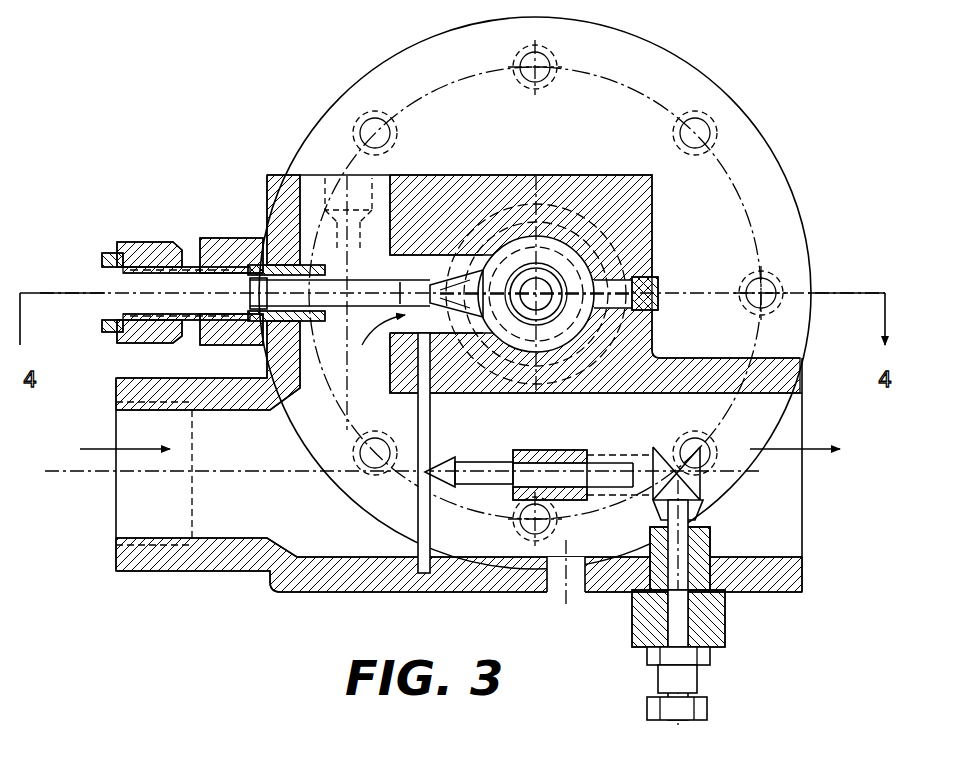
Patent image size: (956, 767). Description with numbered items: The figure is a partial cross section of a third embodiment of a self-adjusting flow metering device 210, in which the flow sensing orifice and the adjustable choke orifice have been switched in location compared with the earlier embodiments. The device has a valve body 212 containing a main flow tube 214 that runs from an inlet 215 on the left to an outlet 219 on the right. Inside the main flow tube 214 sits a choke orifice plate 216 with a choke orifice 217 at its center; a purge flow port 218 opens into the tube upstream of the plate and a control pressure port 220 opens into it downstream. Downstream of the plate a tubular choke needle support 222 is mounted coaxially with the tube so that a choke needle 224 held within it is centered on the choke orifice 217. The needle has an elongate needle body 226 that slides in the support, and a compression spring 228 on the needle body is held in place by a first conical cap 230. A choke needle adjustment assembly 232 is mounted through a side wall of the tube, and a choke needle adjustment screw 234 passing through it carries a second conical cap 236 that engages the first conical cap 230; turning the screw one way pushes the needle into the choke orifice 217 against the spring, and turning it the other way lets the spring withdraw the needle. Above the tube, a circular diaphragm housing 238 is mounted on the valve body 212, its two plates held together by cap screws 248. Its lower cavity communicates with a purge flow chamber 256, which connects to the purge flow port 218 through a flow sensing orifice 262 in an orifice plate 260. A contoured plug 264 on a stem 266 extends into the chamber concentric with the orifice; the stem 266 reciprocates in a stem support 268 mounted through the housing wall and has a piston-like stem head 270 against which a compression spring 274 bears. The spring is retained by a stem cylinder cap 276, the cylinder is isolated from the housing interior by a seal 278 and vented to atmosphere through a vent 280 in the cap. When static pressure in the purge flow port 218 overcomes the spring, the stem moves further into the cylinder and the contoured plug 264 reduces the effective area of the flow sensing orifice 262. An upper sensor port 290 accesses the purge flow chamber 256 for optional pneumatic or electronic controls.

The self-adjusting flow metering device 210 is at (157, 152).
The valve body 212 is at (262, 602).
The main flow tube 214 is at (240, 540).
The inlet 215 is at (116, 525).
The choke orifice plate 216 is at (425, 505).
The choke orifice 217 is at (400, 500).
The purge flow port 218 is at (400, 382).
The outlet 219 is at (796, 557).
The control pressure port 220 is at (575, 595).
The tubular choke needle support 222 is at (540, 450).
The choke needle 224 is at (448, 455).
The needle body 226 is at (610, 500).
The compression spring 228 is at (625, 455).
The first conical cap 230 is at (688, 445).
The choke needle adjustment assembly 232 is at (732, 622).
The choke needle adjustment screw 234 is at (712, 706).
The second conical cap 236 is at (705, 485).
The circular diaphragm housing 238 is at (730, 72).
The cap screws 248 is at (560, 52).
The purge flow chamber 256 is at (628, 238).
The orifice plate 260 is at (405, 278).
The flow sensing orifice 262 is at (460, 268).
The contoured plug 264 is at (520, 230).
The stem 266 is at (372, 170).
The stem support 268 is at (250, 345).
The stem head 270 is at (238, 240).
The compression spring 274 is at (195, 318).
The stem cylinder cap 276 is at (133, 243).
The seal 278 is at (325, 265).
The vent 280 is at (105, 292).
The upper sensor port 290 is at (662, 292).